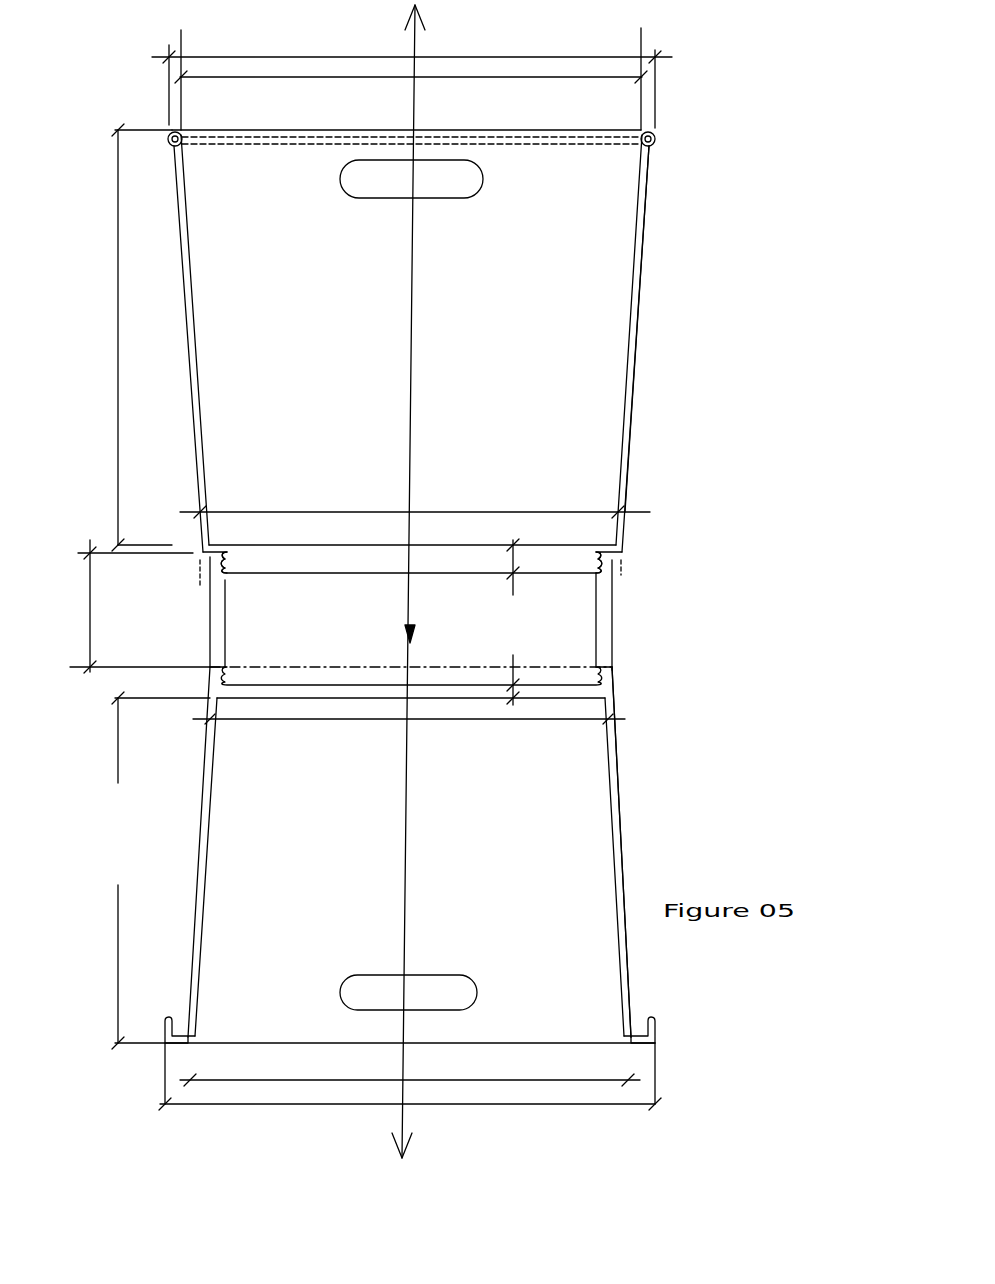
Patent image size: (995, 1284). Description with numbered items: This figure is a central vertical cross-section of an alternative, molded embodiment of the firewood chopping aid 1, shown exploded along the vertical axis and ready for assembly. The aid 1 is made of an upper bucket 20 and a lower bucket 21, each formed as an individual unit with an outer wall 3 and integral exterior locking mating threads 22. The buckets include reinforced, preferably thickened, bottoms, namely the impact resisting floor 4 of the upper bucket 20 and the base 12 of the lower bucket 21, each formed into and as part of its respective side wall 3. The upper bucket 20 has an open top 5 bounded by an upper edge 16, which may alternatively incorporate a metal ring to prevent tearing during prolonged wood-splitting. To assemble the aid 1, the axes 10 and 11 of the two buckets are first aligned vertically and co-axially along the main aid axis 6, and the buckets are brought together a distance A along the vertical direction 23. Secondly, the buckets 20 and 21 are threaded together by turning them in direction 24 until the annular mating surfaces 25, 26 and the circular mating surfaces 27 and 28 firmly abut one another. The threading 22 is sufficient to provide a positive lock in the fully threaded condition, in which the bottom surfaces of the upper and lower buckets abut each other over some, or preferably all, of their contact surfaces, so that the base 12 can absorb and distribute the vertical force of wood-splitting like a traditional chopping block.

The firewood chopping aid 1 is at (45, 207).
The outer wall 3 is at (627, 298).
The impact resisting floor 4 is at (717, 388).
The open top 5 is at (390, 79).
The main aid axis 6 is at (443, 581).
The upper bucket axis 10 is at (105, 337).
The lower bucket axis 11 is at (355, 972).
The base 12 is at (137, 751).
The upper edge 16 is at (653, 148).
The upper bucket 20 is at (466, 351).
The lower bucket 21 is at (430, 855).
The locking mating threads 22 is at (606, 573).
The vertical direction 23 is at (318, 620).
The threading direction 24 is at (397, 181).
The annular mating surface 25 is at (362, 501).
The annular mating surface 26 is at (397, 615).
The circular mating surface 27 is at (412, 506).
The circular mating surface 28 is at (409, 738).
The distance A is at (139, 606).